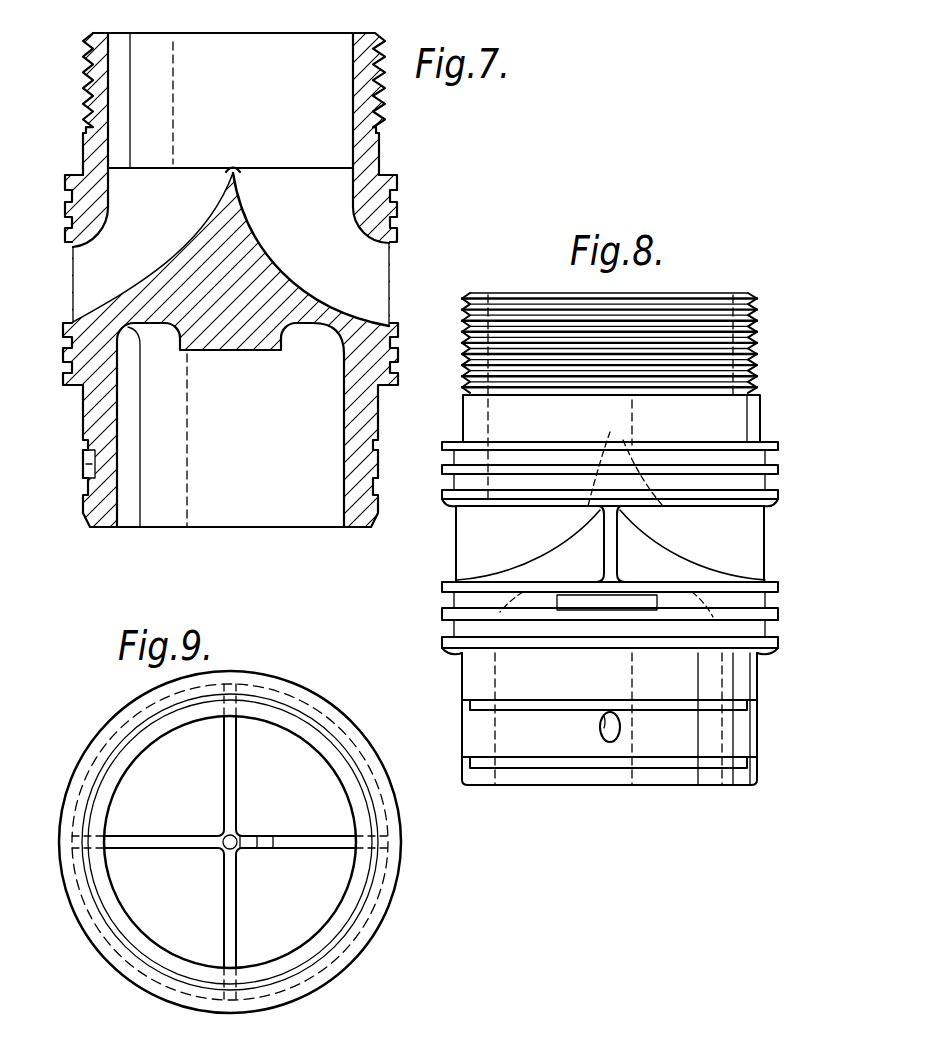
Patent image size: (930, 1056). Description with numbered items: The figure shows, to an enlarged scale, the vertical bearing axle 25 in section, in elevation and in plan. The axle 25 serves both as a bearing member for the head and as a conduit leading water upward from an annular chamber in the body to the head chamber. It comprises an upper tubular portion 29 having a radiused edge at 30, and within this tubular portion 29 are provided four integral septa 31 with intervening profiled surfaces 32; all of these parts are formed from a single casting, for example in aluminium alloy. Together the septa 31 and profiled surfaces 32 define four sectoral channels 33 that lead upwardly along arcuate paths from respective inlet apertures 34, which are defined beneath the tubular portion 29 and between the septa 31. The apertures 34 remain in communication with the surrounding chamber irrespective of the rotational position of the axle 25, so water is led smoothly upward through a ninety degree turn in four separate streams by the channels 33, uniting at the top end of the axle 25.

In FIG. 7, the axle 25 is at (461, 280).
In FIG. 8, the axle 25 is at (597, 515).
In FIG. 9, the axle 25 is at (230, 816).
In FIG. 7, the upper tubular portion 29 is at (368, 154).
In FIG. 8, the upper tubular portion 29 is at (743, 413).
In FIG. 9, the upper tubular portion 29 is at (313, 725).
In FIG. 7, the radiused edge 30 is at (378, 253).
In FIG. 7, the septa 31 is at (237, 170).
In FIG. 8, the septa 31 is at (609, 556).
In FIG. 9, the septa 31 is at (237, 806).
In FIG. 7, the profiled surfaces 32 is at (192, 260).
In FIG. 8, the profiled surfaces 32 is at (470, 578).
In FIG. 7, the sectoral channels 33 is at (196, 209).
In FIG. 8, the sectoral channels 33 is at (712, 541).
In FIG. 9, the sectoral channels 33 is at (194, 796).
In FIG. 7, the inlet apertures 34 is at (389, 275).
In FIG. 8, the inlet apertures 34 is at (457, 532).